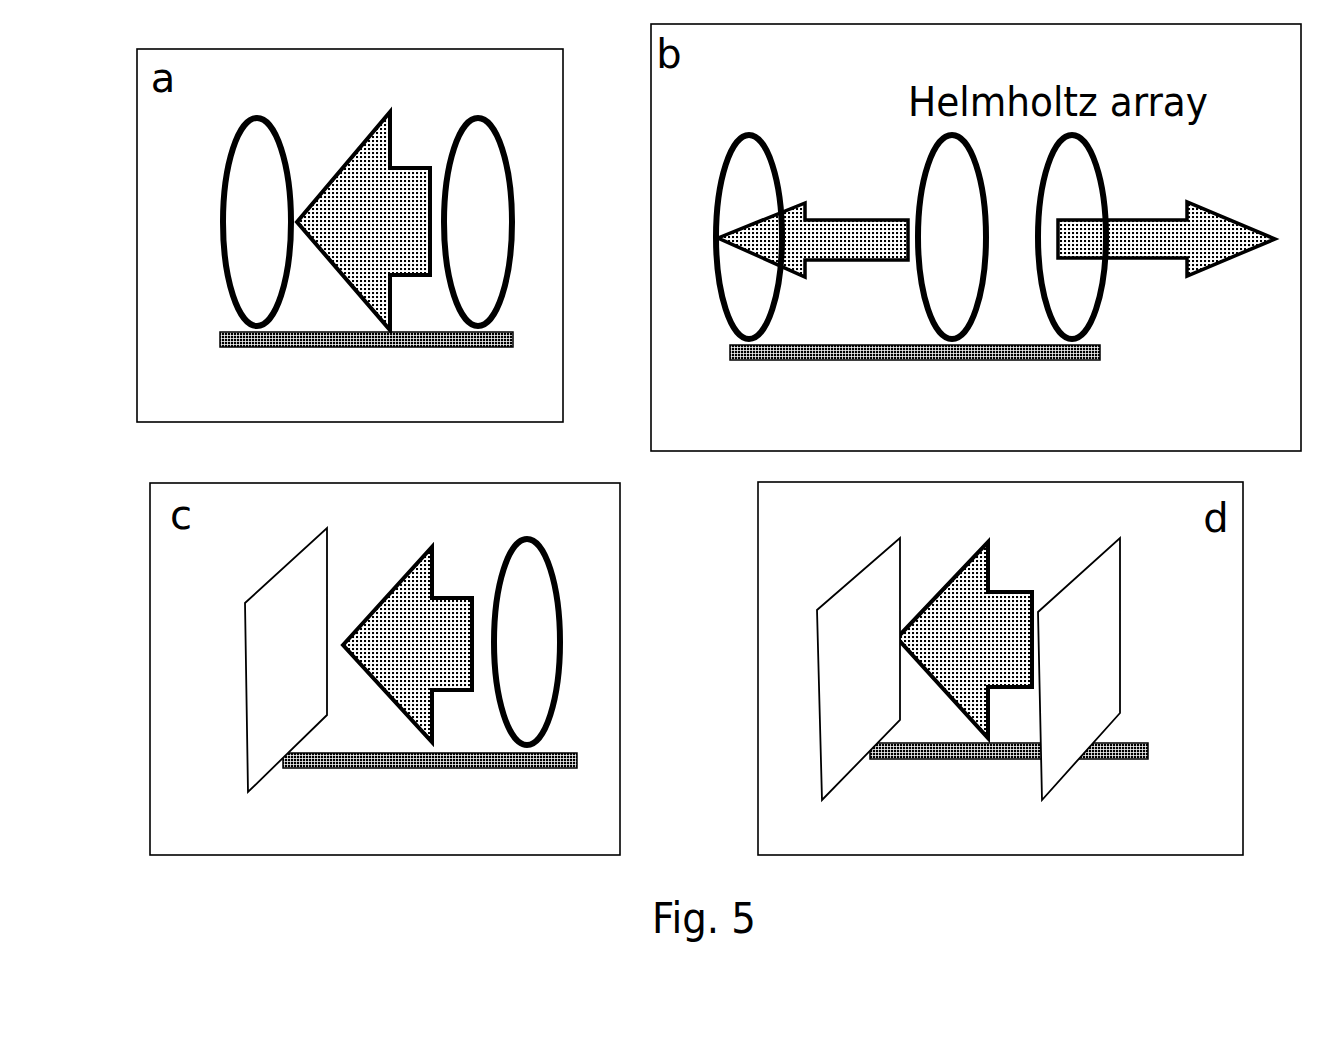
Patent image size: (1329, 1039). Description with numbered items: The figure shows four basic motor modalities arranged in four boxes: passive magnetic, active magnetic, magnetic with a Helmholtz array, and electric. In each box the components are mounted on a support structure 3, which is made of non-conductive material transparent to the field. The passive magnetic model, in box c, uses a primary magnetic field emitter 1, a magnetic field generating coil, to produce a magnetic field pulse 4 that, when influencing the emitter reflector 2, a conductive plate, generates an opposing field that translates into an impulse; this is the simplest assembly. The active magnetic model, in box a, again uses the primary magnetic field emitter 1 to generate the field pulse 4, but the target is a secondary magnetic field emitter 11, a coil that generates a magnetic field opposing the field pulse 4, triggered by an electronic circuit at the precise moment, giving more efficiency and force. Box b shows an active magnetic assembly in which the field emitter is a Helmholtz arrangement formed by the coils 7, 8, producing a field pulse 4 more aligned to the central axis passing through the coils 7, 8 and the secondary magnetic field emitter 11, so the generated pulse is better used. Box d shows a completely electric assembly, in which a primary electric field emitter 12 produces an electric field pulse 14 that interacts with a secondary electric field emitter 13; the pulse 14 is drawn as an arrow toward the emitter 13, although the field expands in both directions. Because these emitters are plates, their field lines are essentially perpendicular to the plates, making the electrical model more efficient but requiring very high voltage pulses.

The primary magnetic field emitter 1 is at (502, 431).
The emitter reflector 2 is at (286, 660).
The support structure 3 is at (700, 577).
The field pulse 4 is at (786, 427).
The coil 7 is at (952, 237).
The coil 8 is at (1072, 237).
The secondary magnetic field emitter 11 is at (502, 228).
The primary electric field emitter 12 is at (1079, 669).
The secondary electric field emitter 13 is at (858, 669).
The electric field pulse 14 is at (964, 640).